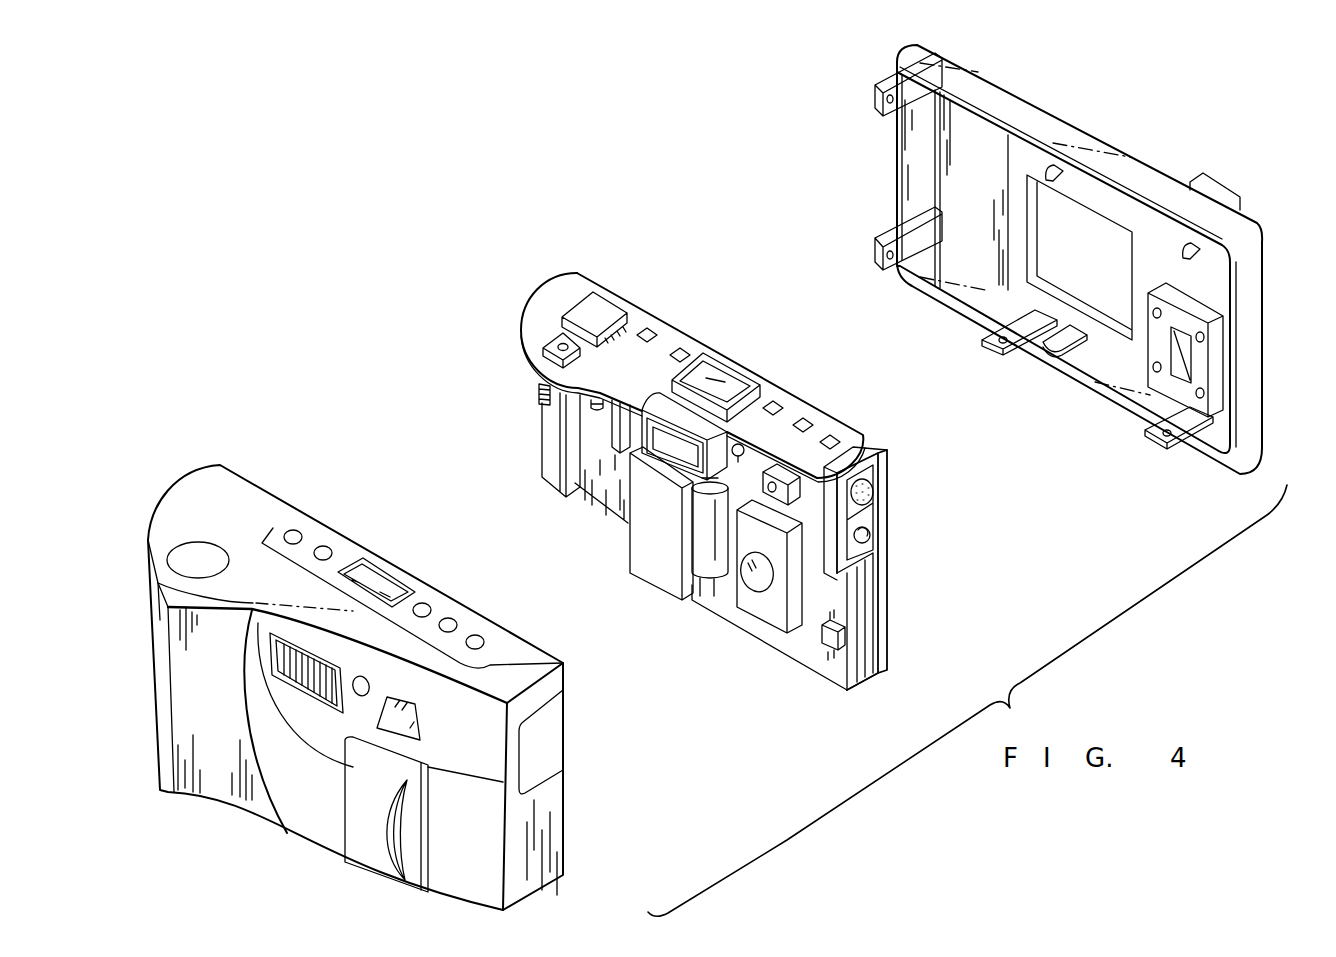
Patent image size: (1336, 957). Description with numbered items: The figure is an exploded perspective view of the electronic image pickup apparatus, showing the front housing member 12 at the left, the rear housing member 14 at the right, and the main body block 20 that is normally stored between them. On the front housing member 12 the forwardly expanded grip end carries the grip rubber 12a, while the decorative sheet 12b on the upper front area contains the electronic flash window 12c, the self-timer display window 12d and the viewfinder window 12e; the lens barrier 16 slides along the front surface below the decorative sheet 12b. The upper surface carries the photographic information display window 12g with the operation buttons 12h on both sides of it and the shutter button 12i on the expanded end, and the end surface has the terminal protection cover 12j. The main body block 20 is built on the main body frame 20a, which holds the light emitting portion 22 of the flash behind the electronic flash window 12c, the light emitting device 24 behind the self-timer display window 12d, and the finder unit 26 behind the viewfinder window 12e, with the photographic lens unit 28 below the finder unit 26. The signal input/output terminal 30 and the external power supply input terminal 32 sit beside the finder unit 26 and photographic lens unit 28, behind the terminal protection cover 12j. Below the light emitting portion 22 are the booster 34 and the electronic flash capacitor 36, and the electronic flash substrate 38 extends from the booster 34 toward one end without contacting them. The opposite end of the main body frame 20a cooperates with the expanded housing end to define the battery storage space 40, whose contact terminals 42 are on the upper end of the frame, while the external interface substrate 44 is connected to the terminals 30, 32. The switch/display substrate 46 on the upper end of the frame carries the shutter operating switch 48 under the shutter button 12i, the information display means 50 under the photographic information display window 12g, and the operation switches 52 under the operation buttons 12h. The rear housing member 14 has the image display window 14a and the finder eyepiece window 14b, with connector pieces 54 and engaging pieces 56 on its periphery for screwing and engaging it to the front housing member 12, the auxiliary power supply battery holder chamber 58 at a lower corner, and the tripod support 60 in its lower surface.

The front housing member 12 is at (378, 681).
The grip rubber 12a is at (218, 798).
The decorative sheet 12b is at (333, 765).
The electronic flash window 12c is at (272, 680).
The self-timer display window 12d is at (358, 695).
The viewfinder window 12e is at (420, 730).
The photographic information display window 12g is at (390, 575).
The operation buttons 12h is at (326, 546).
The shutter button 12i is at (205, 546).
The terminal protection cover 12j is at (558, 748).
The rear housing member 14 is at (1059, 270).
The image display window 14a is at (1072, 285).
The finder eyepiece window 14b is at (1224, 174).
The lens barrier 16 is at (405, 783).
The main body block 20 is at (698, 478).
The main body frame 20a is at (870, 685).
The light emitting portion 22 is at (660, 398).
The light emitting device 24 is at (739, 443).
The finder unit 26 is at (788, 468).
The photographic lens unit 28 is at (765, 615).
The signal input/output terminal 30 is at (876, 484).
The external power supply input terminal 32 is at (872, 534).
The booster 34 is at (658, 578).
The electronic flash capacitor 36 is at (692, 536).
The electronic flash substrate 38 is at (802, 655).
The battery storage space 40 is at (545, 470).
The contact terminals 42 is at (593, 408).
The external interface substrate 44 is at (883, 568).
The switch/display substrate 46 is at (570, 282).
The shutter operating switch 48 is at (545, 345).
The information display means 50 is at (712, 378).
The operation switches 52 is at (680, 350).
The connector pieces 54 is at (875, 97).
The engaging pieces 56 is at (1053, 165).
The auxiliary power supply battery holder chamber 58 is at (1140, 344).
The tripod support 60 is at (1055, 352).